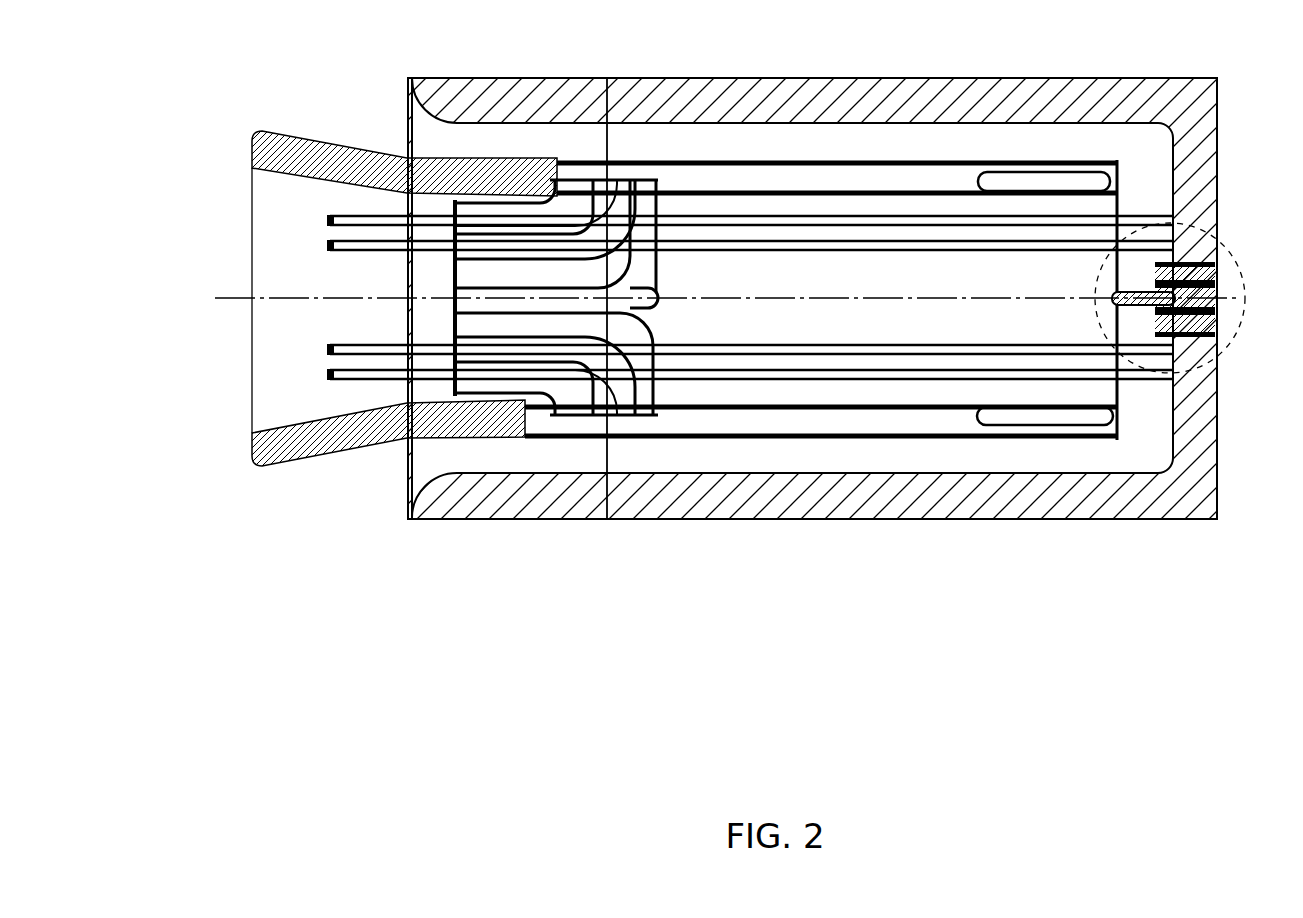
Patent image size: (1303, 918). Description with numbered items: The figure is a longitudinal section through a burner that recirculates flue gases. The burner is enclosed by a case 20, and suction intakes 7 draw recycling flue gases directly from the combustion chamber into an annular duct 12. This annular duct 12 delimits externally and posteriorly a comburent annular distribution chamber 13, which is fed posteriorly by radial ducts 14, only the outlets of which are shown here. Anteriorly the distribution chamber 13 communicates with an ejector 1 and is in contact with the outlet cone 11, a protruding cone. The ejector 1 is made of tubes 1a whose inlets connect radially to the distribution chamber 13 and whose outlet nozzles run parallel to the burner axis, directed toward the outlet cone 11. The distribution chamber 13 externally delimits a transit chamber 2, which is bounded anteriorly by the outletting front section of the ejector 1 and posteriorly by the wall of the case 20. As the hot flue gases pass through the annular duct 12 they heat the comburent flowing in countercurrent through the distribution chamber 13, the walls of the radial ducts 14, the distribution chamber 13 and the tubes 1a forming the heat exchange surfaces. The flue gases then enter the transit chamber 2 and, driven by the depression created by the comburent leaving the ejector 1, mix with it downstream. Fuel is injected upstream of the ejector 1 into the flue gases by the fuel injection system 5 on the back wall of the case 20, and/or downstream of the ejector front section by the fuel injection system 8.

The ejector 1 is at (676, 314).
The tubes 1a is at (465, 380).
The transit chamber 2 is at (720, 285).
The fuel injection system 5 is at (1240, 345).
The suction intakes 7 is at (430, 135).
The fuel injection system 8 is at (350, 222).
The outlet cone 11 is at (275, 465).
The annular duct 12 is at (823, 150).
The comburent annular distribution chamber 13 is at (828, 392).
The radial ducts 14 is at (1035, 187).
The case 20 is at (930, 118).